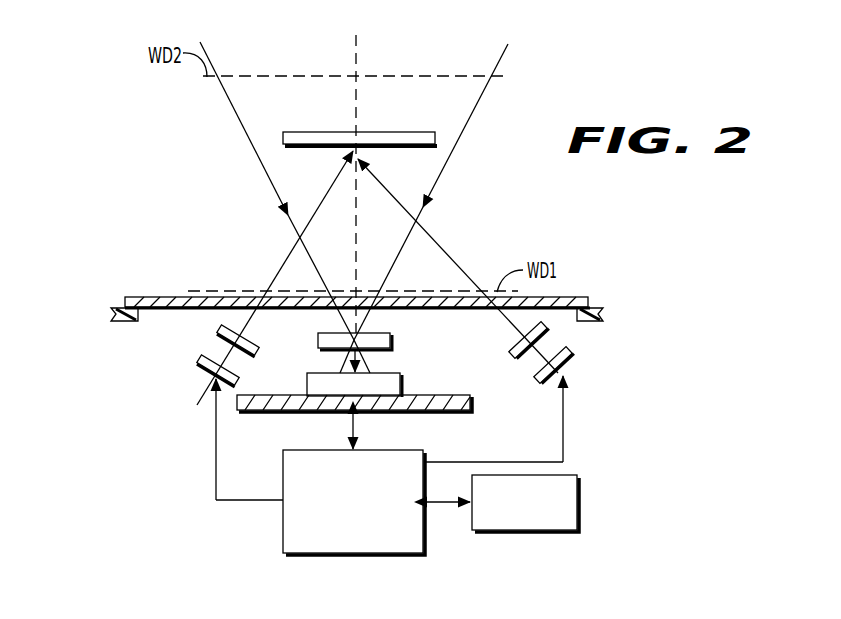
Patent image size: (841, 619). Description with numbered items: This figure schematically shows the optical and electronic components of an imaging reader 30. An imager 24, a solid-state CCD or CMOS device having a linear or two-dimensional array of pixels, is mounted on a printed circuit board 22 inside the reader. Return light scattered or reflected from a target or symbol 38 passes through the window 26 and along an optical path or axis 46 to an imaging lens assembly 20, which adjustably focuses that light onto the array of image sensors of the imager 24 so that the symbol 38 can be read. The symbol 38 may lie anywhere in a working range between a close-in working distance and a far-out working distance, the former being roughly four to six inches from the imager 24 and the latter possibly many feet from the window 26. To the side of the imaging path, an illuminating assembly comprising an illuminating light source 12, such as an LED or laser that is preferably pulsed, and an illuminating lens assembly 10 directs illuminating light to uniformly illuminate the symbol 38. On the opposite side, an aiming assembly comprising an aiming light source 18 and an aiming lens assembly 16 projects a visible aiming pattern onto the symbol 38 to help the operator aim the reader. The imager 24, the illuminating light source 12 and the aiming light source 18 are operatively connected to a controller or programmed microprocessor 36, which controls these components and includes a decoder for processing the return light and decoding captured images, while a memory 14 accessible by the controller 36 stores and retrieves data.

The illuminating lens assembly 10 is at (545, 327).
The illuminating light source 12 is at (577, 350).
The memory 14 is at (525, 532).
The aiming lens assembly 16 is at (220, 335).
The aiming light source 18 is at (200, 360).
The imaging lens assembly 20 is at (337, 333).
The printed circuit board 22 is at (442, 412).
The imager 24 is at (322, 373).
The window 26 is at (137, 298).
The imaging reader field of view 30 is at (478, 236).
The controller 36 is at (352, 555).
The symbol 38 is at (400, 133).
The optical axis 46 is at (357, 50).